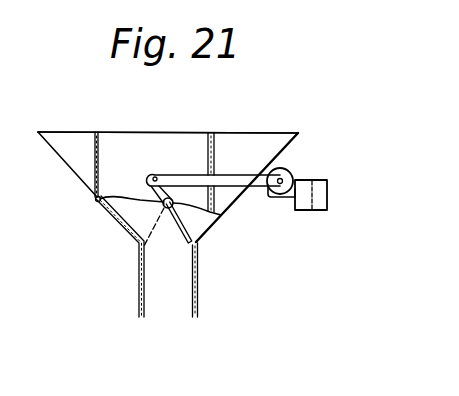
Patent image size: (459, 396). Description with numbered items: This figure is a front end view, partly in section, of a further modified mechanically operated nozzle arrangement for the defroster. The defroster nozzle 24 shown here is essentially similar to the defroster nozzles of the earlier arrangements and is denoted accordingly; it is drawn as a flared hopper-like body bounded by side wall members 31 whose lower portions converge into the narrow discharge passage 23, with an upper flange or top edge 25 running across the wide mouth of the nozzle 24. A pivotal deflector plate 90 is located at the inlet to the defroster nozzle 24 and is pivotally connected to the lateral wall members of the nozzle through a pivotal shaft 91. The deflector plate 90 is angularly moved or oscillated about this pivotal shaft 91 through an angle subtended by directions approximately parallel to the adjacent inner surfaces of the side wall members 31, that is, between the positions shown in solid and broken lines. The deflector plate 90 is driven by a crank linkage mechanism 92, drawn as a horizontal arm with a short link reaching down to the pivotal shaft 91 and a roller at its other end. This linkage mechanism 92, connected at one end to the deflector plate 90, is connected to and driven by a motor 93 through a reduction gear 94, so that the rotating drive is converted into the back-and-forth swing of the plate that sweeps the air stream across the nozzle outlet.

The discharge chute 23 is at (198, 283).
The defroster nozzle 24 is at (141, 163).
The hopper top flange 25 is at (177, 132).
The side wall member 31 is at (298, 140).
The deflector plate 90 is at (190, 224).
The pivotal shaft 91 is at (168, 209).
The crank linkage mechanism 92 is at (232, 163).
The motor 93 is at (328, 198).
The reduction gear 94 is at (278, 198).